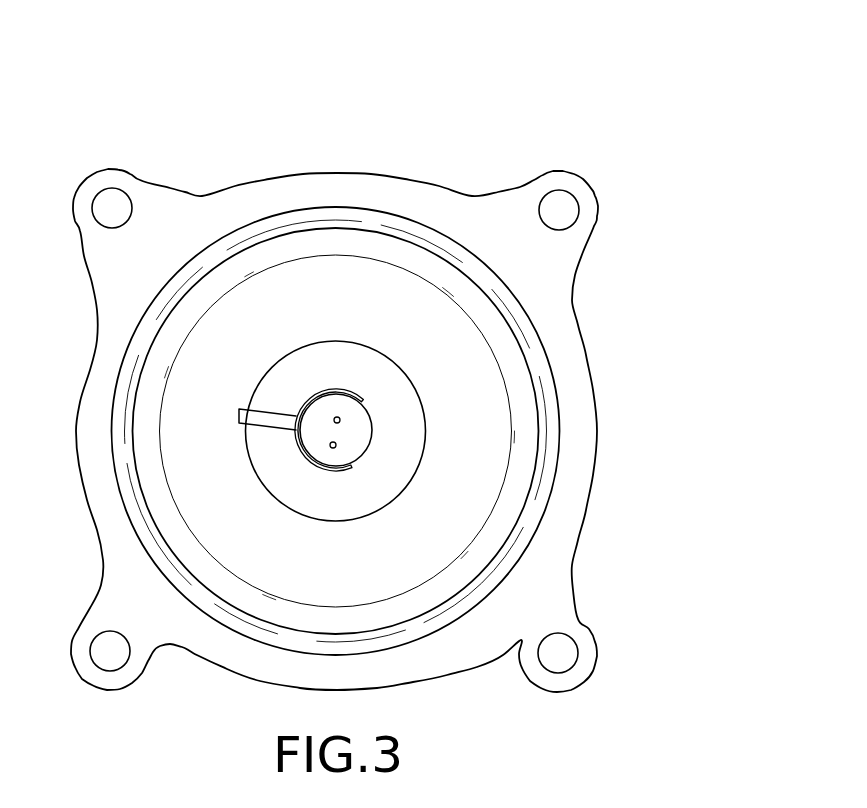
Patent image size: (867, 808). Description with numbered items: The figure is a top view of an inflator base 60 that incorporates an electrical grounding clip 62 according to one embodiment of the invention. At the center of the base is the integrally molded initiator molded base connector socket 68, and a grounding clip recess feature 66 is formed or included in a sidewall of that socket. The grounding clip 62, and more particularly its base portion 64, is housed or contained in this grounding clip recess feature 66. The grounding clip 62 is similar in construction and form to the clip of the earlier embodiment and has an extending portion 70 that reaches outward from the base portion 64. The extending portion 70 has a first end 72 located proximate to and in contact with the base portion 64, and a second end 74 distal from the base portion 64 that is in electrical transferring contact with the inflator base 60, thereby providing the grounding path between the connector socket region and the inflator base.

The inflator base 60 is at (483, 122).
The electrical grounding clip 62 is at (273, 412).
The base portion 64 is at (333, 470).
The grounding clip recess feature 66 is at (290, 437).
The initiator molded base connector socket 68 is at (377, 418).
The extending portion 70 is at (265, 407).
The first end 72 is at (295, 412).
The second end 74 is at (253, 406).